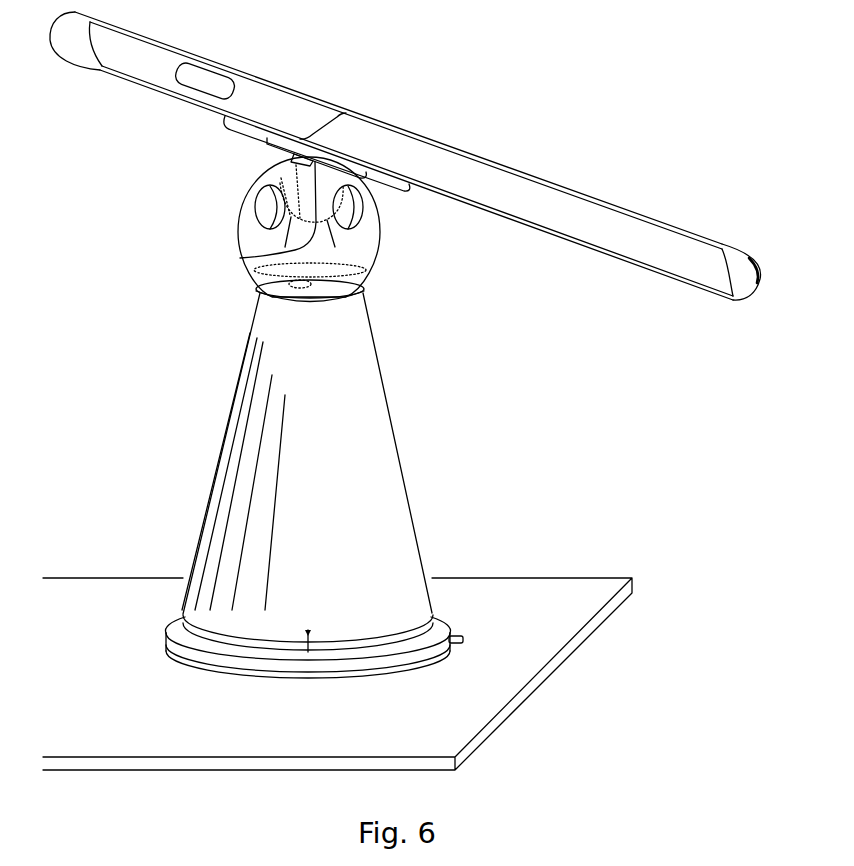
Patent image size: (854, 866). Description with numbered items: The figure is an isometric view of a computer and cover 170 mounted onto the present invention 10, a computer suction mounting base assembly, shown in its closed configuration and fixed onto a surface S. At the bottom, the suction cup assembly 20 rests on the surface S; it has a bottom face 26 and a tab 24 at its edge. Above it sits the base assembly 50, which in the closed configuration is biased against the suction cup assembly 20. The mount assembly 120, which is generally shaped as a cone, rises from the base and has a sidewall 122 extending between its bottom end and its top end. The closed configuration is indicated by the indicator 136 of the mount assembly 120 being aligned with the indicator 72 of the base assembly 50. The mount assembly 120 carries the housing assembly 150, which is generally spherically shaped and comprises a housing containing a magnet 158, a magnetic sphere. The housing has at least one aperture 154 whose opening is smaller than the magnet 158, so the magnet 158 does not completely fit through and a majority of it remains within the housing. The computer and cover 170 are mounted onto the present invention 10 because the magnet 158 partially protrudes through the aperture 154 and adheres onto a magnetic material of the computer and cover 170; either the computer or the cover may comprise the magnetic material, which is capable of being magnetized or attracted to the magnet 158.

The present invention 10 is at (630, 381).
The suction cup assembly 20 is at (445, 592).
The tab 24 is at (465, 640).
The bottom face 26 is at (380, 672).
The base assembly 50 is at (458, 612).
The indicator 72 is at (312, 641).
The mount assembly 120 is at (377, 453).
The sidewall 122 is at (373, 450).
The indicator 136 is at (309, 629).
The housing assembly 150 is at (334, 229).
The aperture 154 is at (302, 257).
The magnet 158 is at (293, 160).
The computer and cover 170 is at (240, 141).
The surface S is at (115, 568).